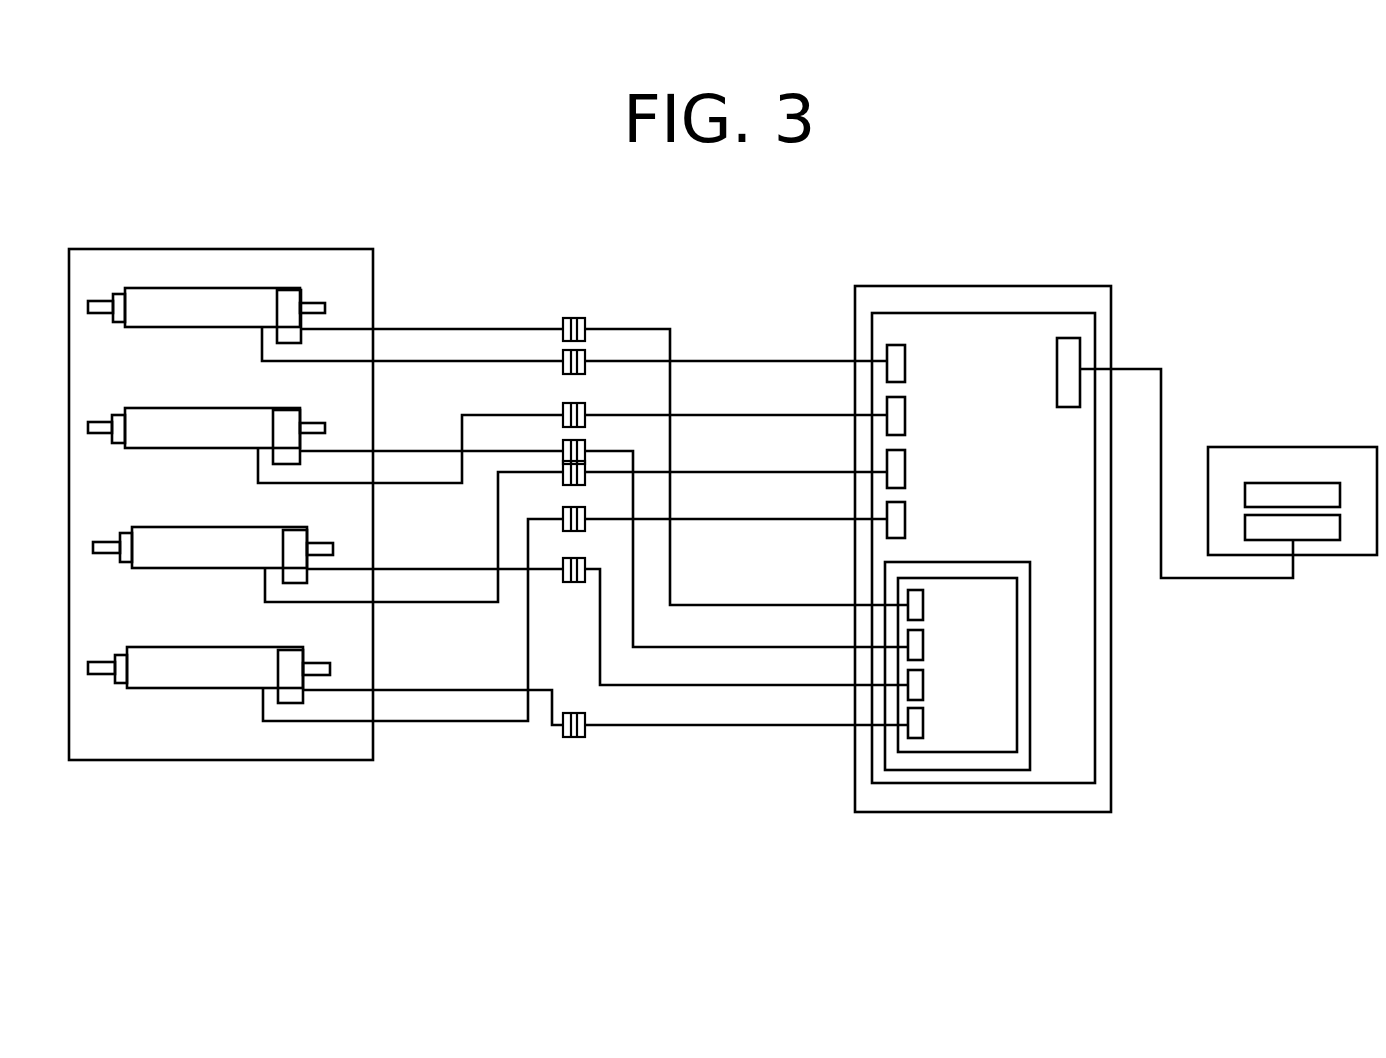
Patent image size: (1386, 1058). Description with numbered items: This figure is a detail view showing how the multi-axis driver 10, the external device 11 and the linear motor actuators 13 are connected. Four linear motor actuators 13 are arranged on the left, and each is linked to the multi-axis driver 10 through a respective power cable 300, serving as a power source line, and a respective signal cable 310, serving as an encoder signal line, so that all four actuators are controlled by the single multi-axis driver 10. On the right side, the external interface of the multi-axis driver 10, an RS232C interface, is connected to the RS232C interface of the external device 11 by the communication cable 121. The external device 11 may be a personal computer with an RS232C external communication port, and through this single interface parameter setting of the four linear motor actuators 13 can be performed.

The linear motor actuator 13 is at (378, 289).
The multi-axis driver 10 is at (957, 286).
The external device 11 is at (1250, 447).
The communication cable 121 is at (1220, 578).
The power cable 300 is at (717, 361).
The signal cable 310 is at (716, 605).